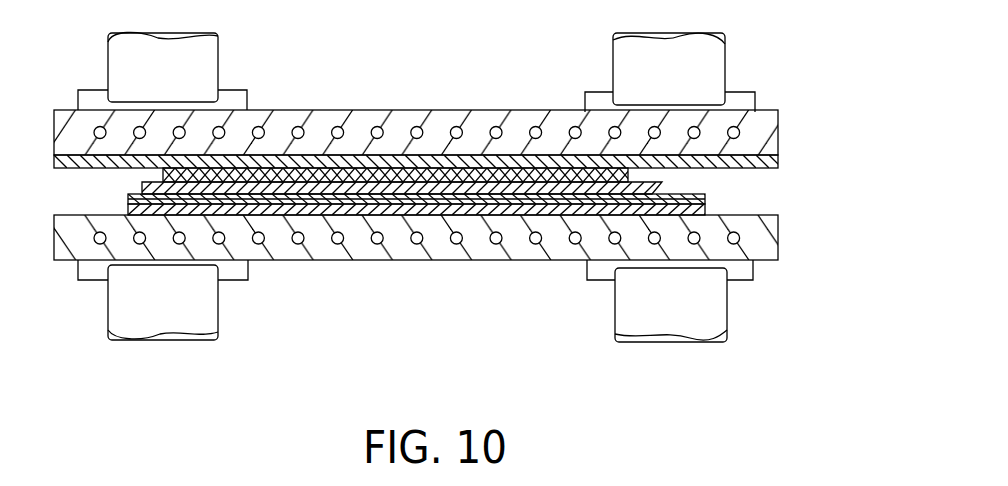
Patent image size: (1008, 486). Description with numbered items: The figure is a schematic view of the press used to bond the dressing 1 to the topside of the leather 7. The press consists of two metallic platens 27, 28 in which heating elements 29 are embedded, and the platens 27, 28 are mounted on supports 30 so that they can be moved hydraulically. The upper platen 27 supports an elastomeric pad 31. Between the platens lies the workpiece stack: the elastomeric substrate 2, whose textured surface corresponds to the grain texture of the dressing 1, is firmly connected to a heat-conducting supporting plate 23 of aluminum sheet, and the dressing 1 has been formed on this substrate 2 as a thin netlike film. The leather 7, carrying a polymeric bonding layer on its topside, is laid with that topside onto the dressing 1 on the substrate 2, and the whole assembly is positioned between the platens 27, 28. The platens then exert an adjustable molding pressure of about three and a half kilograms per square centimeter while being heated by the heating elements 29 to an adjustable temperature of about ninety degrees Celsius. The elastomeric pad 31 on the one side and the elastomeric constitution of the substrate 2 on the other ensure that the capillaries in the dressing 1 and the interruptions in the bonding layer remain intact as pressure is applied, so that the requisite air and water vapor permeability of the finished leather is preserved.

The dressing 1 is at (566, 200).
The elastomeric substrate 2 is at (447, 212).
The leather 7 is at (265, 218).
The heat-conducting supporting plate 23 is at (517, 210).
The upper platen 27 is at (753, 130).
The lower platen 28 is at (777, 245).
The heating elements 29 is at (378, 132).
The supports 30 is at (183, 72).
The elastomeric pad 31 is at (302, 166).